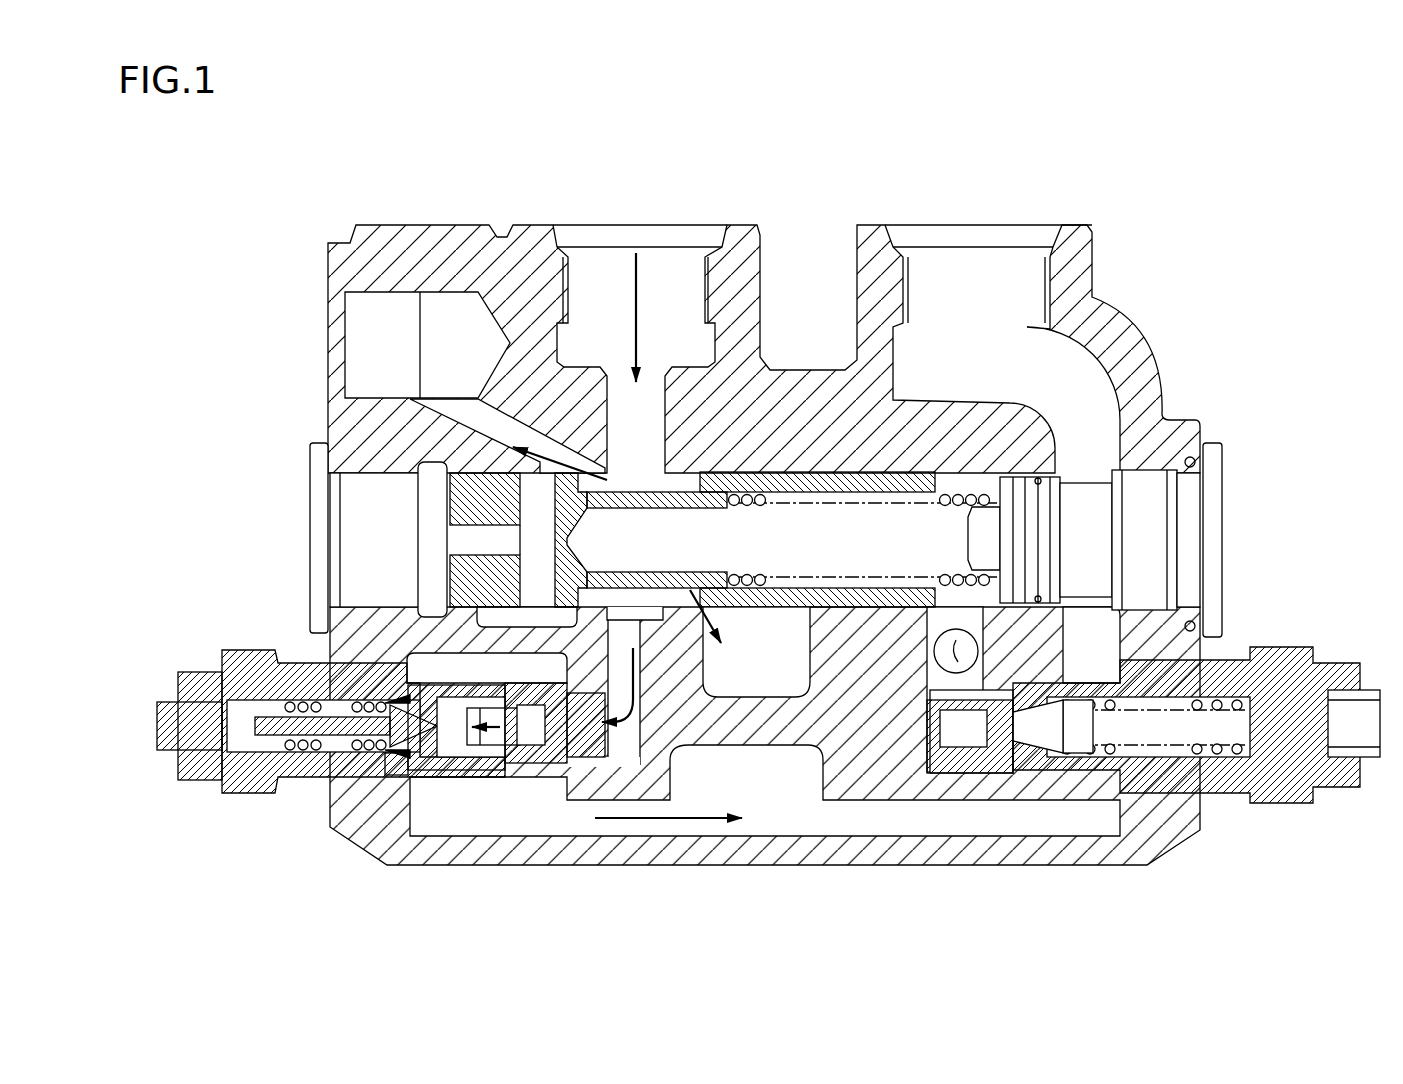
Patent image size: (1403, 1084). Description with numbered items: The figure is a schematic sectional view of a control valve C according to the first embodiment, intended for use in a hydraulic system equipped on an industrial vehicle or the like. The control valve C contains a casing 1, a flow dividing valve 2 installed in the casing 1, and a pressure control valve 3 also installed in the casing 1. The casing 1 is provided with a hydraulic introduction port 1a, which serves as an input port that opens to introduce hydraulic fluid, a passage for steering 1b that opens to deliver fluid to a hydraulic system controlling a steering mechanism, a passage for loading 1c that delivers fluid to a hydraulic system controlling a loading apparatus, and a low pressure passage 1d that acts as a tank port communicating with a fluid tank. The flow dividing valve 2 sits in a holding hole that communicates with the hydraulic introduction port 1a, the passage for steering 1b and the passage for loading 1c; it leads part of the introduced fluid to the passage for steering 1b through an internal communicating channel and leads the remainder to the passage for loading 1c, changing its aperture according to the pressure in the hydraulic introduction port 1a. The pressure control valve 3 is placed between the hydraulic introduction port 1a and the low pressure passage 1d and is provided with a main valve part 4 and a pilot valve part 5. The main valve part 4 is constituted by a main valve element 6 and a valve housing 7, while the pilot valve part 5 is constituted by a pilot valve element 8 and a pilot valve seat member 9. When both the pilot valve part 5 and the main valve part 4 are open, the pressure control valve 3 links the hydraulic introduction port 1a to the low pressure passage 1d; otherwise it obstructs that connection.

The casing 1 is at (357, 260).
The hydraulic introduction port 1a is at (672, 290).
The passage for steering 1b is at (957, 650).
The passage for loading 1c is at (758, 668).
The low pressure passage 1d is at (981, 295).
The flow dividing valve 2 is at (472, 510).
The pressure control valve 3 is at (226, 808).
The main valve part 4 is at (528, 790).
The pilot valve part 5 is at (382, 762).
The main valve element 6 is at (484, 765).
The valve housing 7 is at (438, 792).
The pilot valve element 8 is at (390, 757).
The pilot valve seat member 9 is at (398, 772).
The control valve C is at (1196, 338).